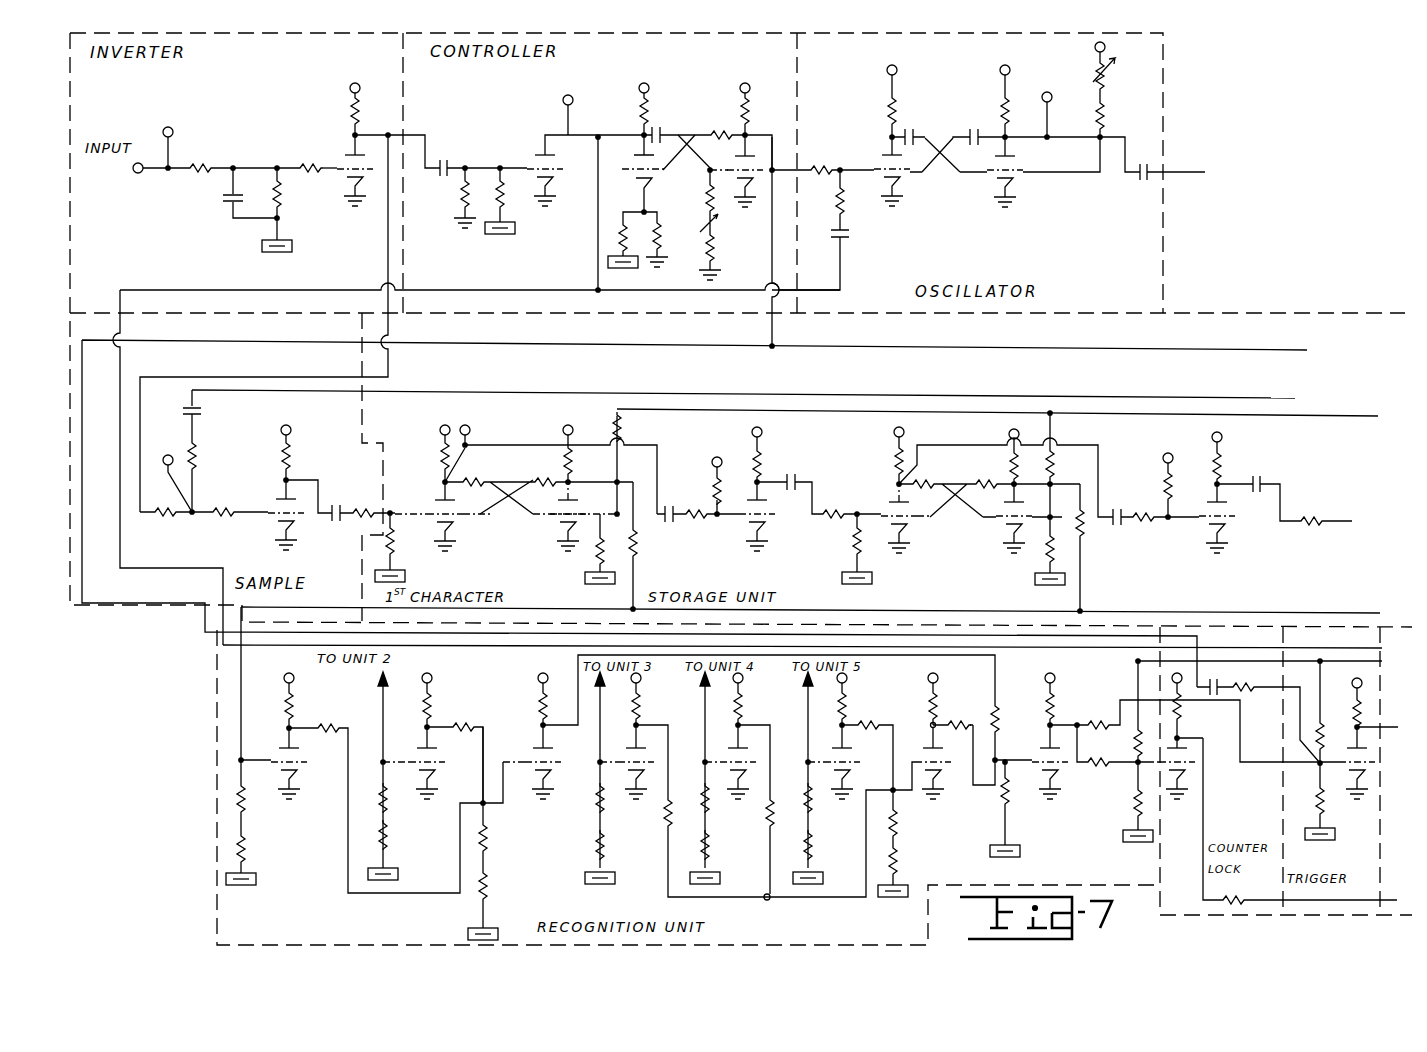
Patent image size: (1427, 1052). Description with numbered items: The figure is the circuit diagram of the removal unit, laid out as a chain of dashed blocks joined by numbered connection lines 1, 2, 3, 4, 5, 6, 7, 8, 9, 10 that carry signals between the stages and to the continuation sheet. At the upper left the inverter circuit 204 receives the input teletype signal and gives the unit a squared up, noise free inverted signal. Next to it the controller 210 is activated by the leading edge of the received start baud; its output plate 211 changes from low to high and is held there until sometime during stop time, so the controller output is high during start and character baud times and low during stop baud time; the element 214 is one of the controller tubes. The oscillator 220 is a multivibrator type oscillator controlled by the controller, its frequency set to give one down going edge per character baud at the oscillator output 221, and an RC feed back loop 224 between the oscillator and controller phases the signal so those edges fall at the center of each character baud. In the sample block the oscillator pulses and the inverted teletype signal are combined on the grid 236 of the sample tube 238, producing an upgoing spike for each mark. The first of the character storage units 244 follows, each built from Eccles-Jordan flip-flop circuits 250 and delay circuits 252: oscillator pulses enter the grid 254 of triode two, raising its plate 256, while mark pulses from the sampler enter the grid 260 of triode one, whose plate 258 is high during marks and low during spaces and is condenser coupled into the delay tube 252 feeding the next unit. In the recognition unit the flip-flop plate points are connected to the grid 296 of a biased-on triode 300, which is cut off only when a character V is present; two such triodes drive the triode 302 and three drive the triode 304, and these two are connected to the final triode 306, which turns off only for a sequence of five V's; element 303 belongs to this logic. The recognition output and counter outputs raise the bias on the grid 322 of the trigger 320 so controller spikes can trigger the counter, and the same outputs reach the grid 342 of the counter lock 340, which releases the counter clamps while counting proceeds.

The inverter circuit 204 is at (244, 120).
The controller 210 is at (526, 161).
The output plate 211 is at (540, 152).
The controller flip-flop transistor 214 is at (746, 156).
The oscillator 220 is at (959, 166).
The oscillator output 221 is at (1062, 73).
The RC feed back loop 224 is at (842, 266).
The grid 236 is at (273, 516).
The sample tube 238 is at (246, 480).
The character storage units 244 is at (756, 381).
The Eccles-Jordan flip-flop circuit 250 is at (523, 509).
The delay circuit 252 is at (708, 448).
The grid of triode two 254 is at (596, 506).
The plate of triode two 256 is at (570, 481).
The plate of triode one 258 is at (445, 482).
The grid of triode one 260 is at (473, 516).
The grid 296 is at (270, 765).
The triode 300 is at (280, 748).
The triode 302 is at (531, 842).
The transistor 303 is at (928, 738).
The triode 304 is at (980, 820).
The final triode 306 is at (1106, 808).
The trigger circuit 320 is at (1308, 760).
The grid 322 is at (1365, 759).
The counter lock circuit 340 is at (1192, 750).
The grid 342 is at (1182, 766).
The line 1 is at (1184, 174).
The line 2 is at (703, 513).
The line 3 is at (548, 378).
The line 4 is at (1008, 417).
The line 5 is at (1296, 504).
The line 6 is at (818, 614).
The line 7 is at (815, 648).
The line 8 is at (1273, 666).
The line 9 is at (1385, 728).
The line 10 is at (1313, 825).